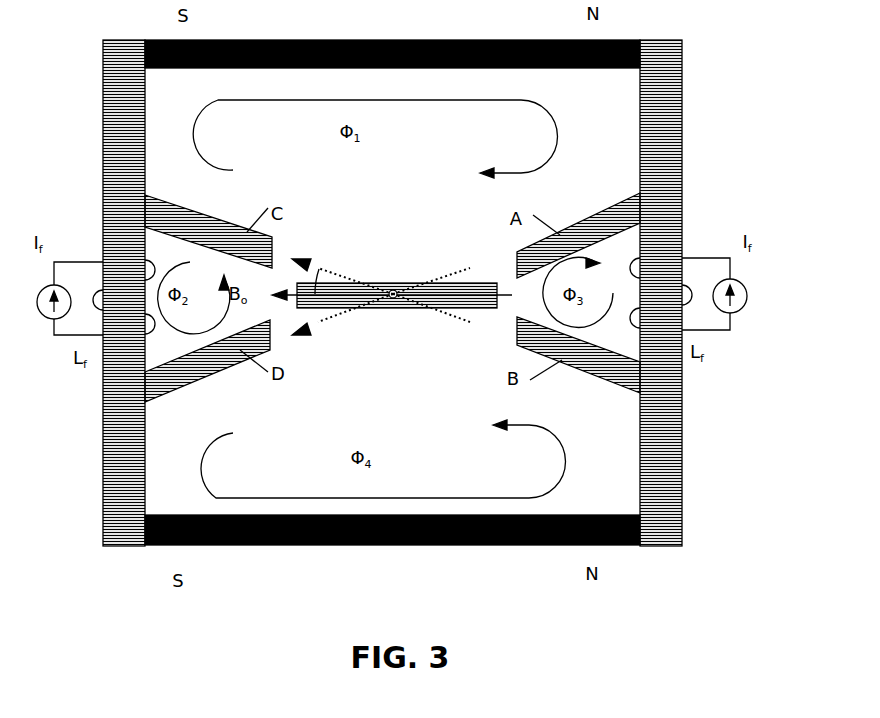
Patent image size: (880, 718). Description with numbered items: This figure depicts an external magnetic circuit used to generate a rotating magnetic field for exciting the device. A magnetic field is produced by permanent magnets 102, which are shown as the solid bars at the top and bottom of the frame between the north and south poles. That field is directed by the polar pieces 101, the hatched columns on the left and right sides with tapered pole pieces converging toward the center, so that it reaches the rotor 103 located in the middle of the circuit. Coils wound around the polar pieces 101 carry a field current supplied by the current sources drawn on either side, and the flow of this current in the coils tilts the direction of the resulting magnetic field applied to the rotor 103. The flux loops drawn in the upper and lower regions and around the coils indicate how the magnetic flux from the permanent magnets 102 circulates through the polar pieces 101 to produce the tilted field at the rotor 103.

The polar pieces 101 is at (125, 170).
The permanent magnets 102 is at (452, 32).
The rotor 103 is at (387, 280).